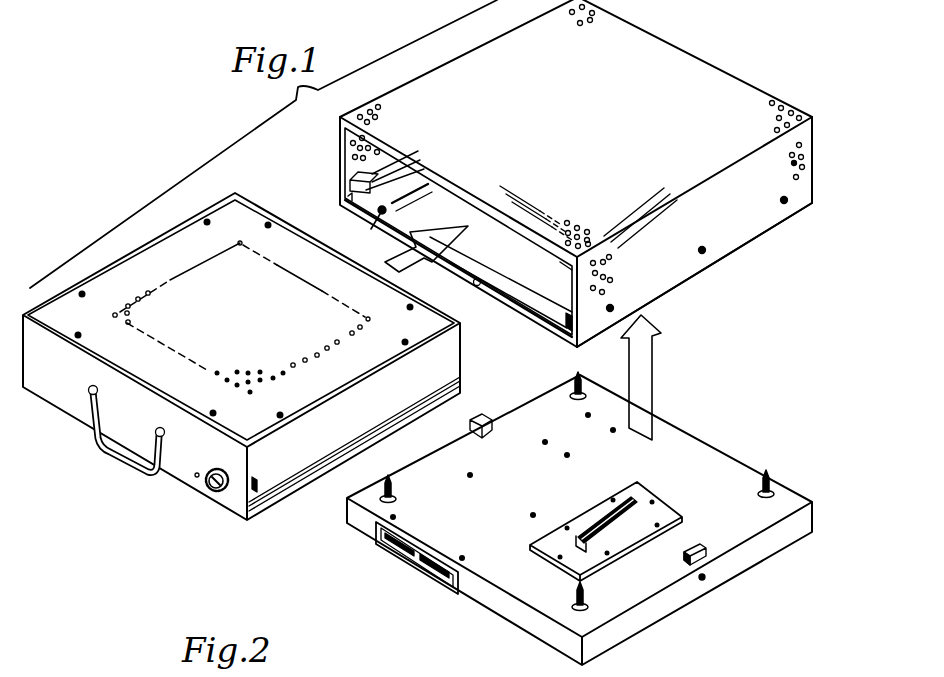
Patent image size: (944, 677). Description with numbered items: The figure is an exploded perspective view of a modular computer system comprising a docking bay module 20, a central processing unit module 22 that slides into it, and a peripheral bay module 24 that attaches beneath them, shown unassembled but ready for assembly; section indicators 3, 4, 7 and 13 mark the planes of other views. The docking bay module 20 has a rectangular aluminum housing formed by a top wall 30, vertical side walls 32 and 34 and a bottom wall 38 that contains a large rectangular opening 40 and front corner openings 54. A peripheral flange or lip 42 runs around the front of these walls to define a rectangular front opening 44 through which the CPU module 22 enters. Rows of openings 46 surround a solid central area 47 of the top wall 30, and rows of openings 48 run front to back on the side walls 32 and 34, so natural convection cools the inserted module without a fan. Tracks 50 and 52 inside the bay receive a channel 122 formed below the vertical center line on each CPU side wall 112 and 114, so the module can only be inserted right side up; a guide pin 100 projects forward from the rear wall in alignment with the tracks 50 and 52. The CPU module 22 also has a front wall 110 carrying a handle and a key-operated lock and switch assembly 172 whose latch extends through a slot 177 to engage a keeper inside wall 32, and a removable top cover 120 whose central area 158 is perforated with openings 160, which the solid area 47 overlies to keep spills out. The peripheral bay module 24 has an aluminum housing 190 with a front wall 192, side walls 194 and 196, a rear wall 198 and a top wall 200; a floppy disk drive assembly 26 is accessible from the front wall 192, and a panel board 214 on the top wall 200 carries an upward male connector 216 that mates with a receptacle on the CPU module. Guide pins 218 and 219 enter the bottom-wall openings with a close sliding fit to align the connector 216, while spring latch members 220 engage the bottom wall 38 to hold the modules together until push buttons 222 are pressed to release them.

The section line 3- 3 is at (806, 88).
The section line 4- 4 is at (508, 14).
The section line 7- 7 is at (224, 189).
The section line 13- 13 is at (570, 670).
The docking bay module 20 is at (681, 41).
The central processing unit (CPU) module 22 is at (105, 448).
The peripheral bay module 24 is at (475, 602).
The floppy disk drive assembly 26 is at (416, 575).
The top wall 30 is at (661, 76).
The side wall 32 is at (699, 264).
The side wall 34 is at (346, 181).
The bottom wall 38 is at (484, 265).
The rectangular opening 40 is at (419, 190).
The peripheral flange or lip 42 is at (566, 261).
The rectangular front opening 44 is at (474, 284).
The openings 46 is at (618, 220).
The central area 47 is at (525, 160).
The openings 48 is at (345, 141).
The track 50 is at (557, 331).
The track 52 is at (346, 197).
The front openings 54 is at (370, 229).
The guide pin 100 is at (283, 510).
The front wall 110 is at (72, 402).
The side wall 112 is at (411, 394).
The side wall 114 is at (158, 236).
The removable top cover 120 is at (139, 277).
The channel 122 is at (462, 392).
The central area 158 is at (203, 330).
The openings 160 is at (273, 373).
The key operated lock and switch assembly 172 is at (206, 494).
The slot 177 is at (262, 487).
The housing 190 is at (745, 577).
The front wall 192 is at (548, 640).
The side wall 194 is at (657, 636).
The side wall 196 is at (345, 512).
The rear wall 198 is at (681, 432).
The top wall 200 is at (645, 470).
The panel board 214 is at (636, 548).
The 96-pin male connector 216 is at (600, 522).
The guide pin 218 is at (575, 382).
The guide pin 219 is at (398, 494).
The spring latch member 220 is at (478, 440).
The push button 222 is at (703, 580).